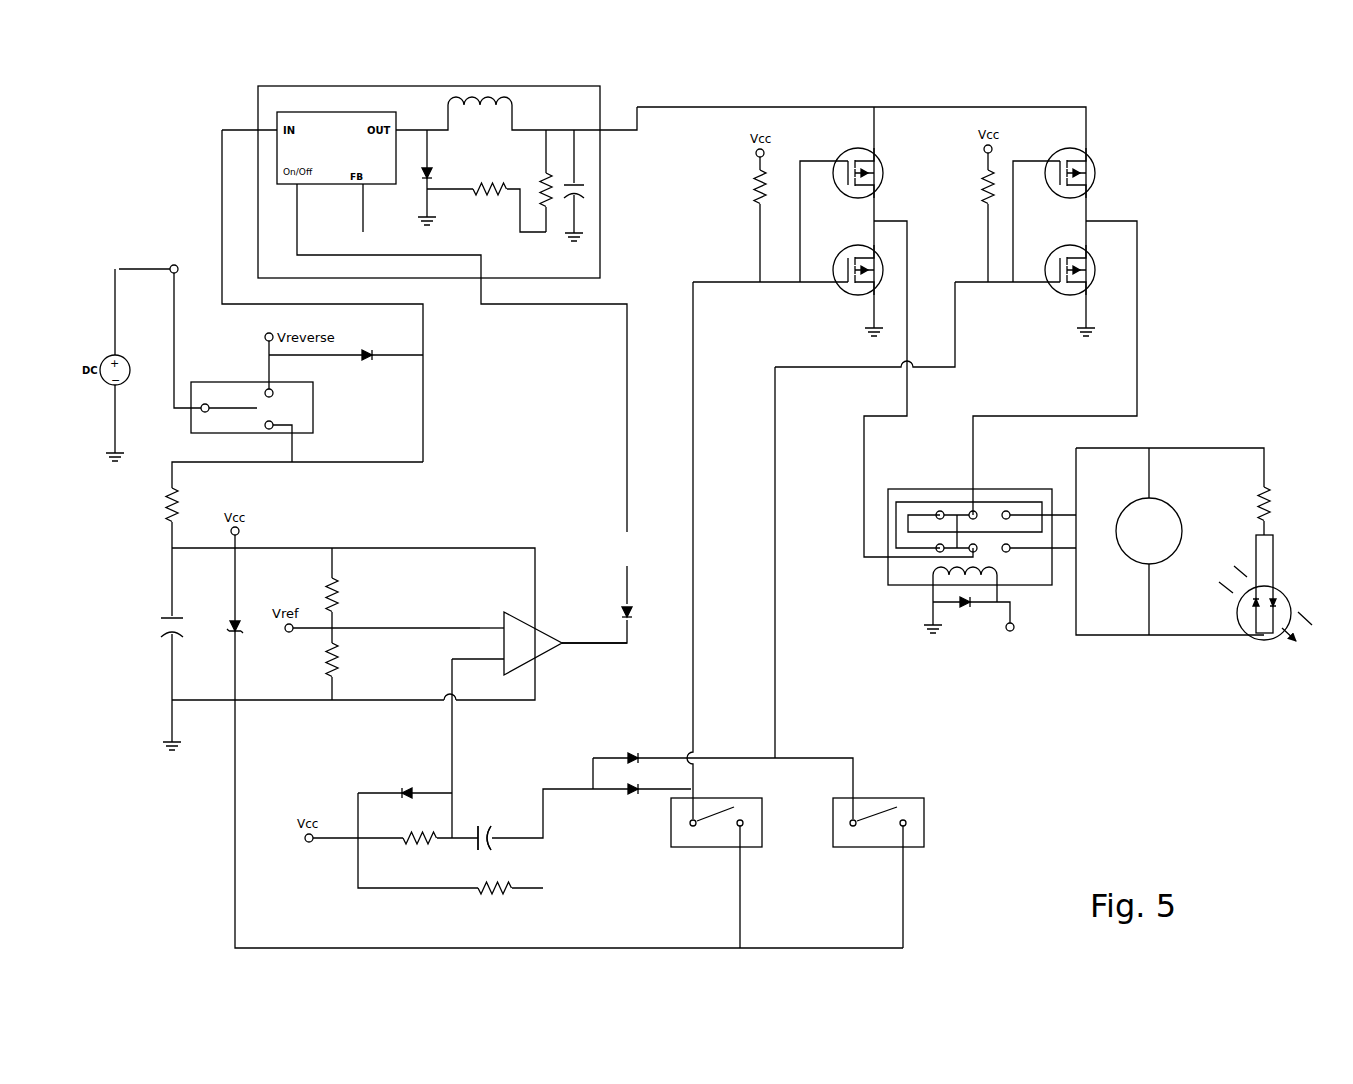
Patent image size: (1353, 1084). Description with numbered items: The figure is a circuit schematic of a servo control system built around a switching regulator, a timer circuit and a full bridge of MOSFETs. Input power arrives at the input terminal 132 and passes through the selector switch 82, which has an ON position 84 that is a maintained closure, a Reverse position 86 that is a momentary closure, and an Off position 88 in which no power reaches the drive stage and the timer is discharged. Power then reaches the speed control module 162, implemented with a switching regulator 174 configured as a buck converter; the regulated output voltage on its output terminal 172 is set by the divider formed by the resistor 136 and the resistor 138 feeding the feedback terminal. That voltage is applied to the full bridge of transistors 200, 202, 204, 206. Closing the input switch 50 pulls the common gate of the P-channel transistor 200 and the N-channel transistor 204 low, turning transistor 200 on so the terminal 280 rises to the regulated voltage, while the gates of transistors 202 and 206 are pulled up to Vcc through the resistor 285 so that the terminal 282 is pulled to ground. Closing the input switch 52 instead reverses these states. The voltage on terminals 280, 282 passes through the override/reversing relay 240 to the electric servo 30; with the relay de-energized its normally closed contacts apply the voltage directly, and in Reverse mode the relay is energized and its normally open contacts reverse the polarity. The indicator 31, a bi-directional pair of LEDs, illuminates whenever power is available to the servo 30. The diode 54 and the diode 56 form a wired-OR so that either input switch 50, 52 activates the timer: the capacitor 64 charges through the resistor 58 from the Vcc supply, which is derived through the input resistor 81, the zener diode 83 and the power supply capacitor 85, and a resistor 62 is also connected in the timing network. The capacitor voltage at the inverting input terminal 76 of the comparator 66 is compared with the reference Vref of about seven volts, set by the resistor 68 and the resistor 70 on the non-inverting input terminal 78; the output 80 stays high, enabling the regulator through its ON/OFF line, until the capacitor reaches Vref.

The speed control module 162 is at (256, 92).
The switching regulator 174 is at (357, 110).
The resistor 138 is at (485, 185).
The resistor 136 is at (541, 186).
The output terminal 172 is at (641, 132).
The P-channel transistor 200 is at (848, 150).
The N-channel transistor 204 is at (843, 252).
The transistor 202 is at (1057, 150).
The transistor 206 is at (1053, 251).
The resistor 285 is at (978, 190).
The terminal 280 is at (862, 473).
The terminal 282 is at (970, 473).
The override/reversing relay 240 is at (905, 588).
The electric servo 30 is at (1187, 510).
The indicator 31 is at (1287, 583).
The input terminal 132 is at (172, 262).
The selector switch 82 is at (218, 379).
The Reverse position 86 is at (264, 386).
The Off position 88 is at (286, 408).
The ON position 84 is at (262, 431).
The input resistor 81 is at (161, 511).
The power supply capacitor 85 is at (159, 625).
The zener diode 83 is at (243, 620).
The resistor 68 is at (345, 592).
The resistor 70 is at (345, 654).
The non-inverting input terminal 78 is at (497, 622).
The inverting input terminal 76 is at (497, 658).
The comparator 66 is at (545, 657).
The output 80 is at (577, 647).
The diode 54 is at (637, 746).
The diode 56 is at (625, 801).
The input switch 50 is at (758, 854).
The input switch 52 is at (930, 834).
The resistor 58 is at (413, 848).
The resistor 62 is at (478, 880).
The capacitor 64 is at (491, 847).